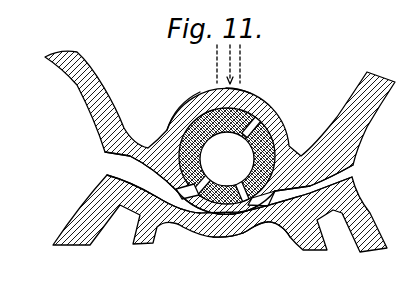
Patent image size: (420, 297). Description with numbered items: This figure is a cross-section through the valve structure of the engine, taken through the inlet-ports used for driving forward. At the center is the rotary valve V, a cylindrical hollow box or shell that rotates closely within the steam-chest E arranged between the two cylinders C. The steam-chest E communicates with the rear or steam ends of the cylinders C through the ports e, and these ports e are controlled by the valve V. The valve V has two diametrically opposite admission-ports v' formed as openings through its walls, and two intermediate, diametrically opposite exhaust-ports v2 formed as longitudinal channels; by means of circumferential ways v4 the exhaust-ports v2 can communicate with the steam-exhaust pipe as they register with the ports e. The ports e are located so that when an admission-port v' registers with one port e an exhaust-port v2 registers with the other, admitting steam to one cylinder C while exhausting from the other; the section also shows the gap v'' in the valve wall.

The cylinder C is at (220, 151).
The port e is at (106, 166).
The steam-chest E is at (277, 102).
The rotary valve V is at (227, 159).
The admission-port v' is at (239, 181).
The insertion gap of bearing shell v'' is at (246, 82).
The exhaust-port v2 is at (198, 114).
The circumferential way v4 is at (221, 234).